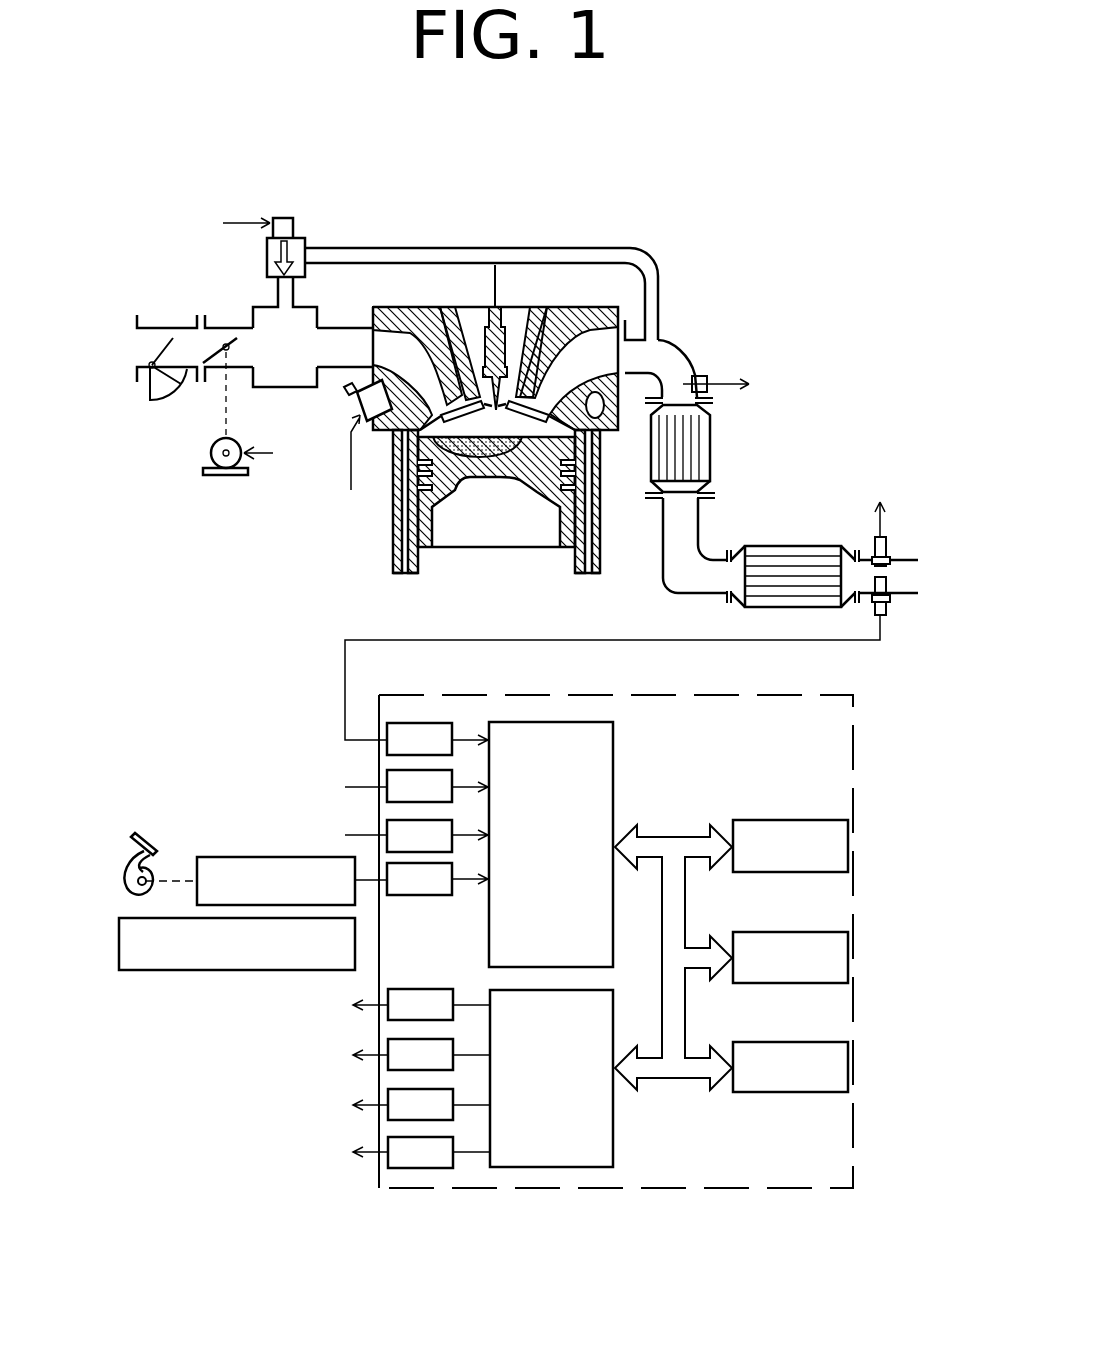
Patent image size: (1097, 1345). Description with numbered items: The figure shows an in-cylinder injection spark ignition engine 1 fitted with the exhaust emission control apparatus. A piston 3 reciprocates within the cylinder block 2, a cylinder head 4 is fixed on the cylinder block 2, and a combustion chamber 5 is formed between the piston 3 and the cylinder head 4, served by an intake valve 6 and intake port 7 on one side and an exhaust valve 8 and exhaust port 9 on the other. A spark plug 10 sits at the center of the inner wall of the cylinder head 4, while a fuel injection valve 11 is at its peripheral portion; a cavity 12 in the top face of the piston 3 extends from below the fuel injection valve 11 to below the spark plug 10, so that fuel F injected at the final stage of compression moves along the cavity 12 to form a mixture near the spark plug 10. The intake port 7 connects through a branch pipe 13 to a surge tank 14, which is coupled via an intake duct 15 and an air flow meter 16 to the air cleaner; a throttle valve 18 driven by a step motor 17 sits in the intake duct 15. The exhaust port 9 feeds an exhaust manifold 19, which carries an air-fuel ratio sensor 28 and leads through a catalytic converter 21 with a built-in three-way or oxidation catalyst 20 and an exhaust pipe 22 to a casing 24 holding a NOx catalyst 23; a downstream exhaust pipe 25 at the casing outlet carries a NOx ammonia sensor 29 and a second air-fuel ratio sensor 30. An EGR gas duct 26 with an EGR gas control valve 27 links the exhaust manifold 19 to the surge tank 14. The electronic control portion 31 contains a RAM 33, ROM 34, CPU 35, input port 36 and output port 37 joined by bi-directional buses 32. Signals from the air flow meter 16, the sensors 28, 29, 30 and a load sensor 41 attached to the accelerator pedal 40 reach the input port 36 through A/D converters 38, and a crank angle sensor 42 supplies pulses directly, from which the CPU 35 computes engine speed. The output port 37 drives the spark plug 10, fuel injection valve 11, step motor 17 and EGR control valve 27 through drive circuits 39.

The engine 1 is at (383, 538).
The cylinder block 2 is at (600, 507).
The piston 3 is at (433, 512).
The cylinder head 4 is at (590, 345).
The combustion chamber 5 is at (593, 463).
The intake valve 6 is at (447, 327).
The intake port 7 is at (417, 343).
The exhaust valve 8 is at (553, 322).
The exhaust port 9 is at (622, 325).
The spark plug 10 is at (497, 342).
The fuel injection valve 11 is at (350, 410).
The cavity 12 is at (393, 485).
The branch pipe 13 is at (340, 347).
The surge tank 14 is at (283, 388).
The intake duct 15 is at (220, 327).
The air flow meter 16 is at (173, 328).
The step motor 17 is at (212, 457).
The throttle valve 18 is at (237, 343).
The exhaust manifold 19 is at (680, 341).
The oxidation catalyst or three-way catalyst 20 is at (710, 447).
The catalytic converter 21 is at (710, 478).
The exhaust pipe 22 is at (663, 588).
The NOx catalyst 23 is at (788, 558).
The casing 24 is at (826, 542).
The exhaust pipe 25 is at (902, 557).
The EGR gas duct 26 is at (492, 248).
The EGR gas control valve 27 is at (267, 248).
The air-fuel ratio sensor 28 is at (709, 368).
The NOx ammonia sensor 29 is at (886, 607).
The air-fuel ratio sensor 30 is at (886, 542).
The electronic control portion 31 is at (866, 741).
The bi-directional buses 32 is at (660, 828).
The RAM 33 is at (770, 820).
The ROM 34 is at (770, 932).
The CPU 35 is at (770, 1042).
The input port 36 is at (613, 730).
The output port 37 is at (615, 1140).
The A/D converter 38 is at (387, 870).
The drive circuit 39 is at (388, 1143).
The accelerator pedal 40 is at (150, 832).
The load sensor 41 is at (242, 857).
The crank angle sensor 42 is at (190, 970).
The fuel F is at (505, 478).